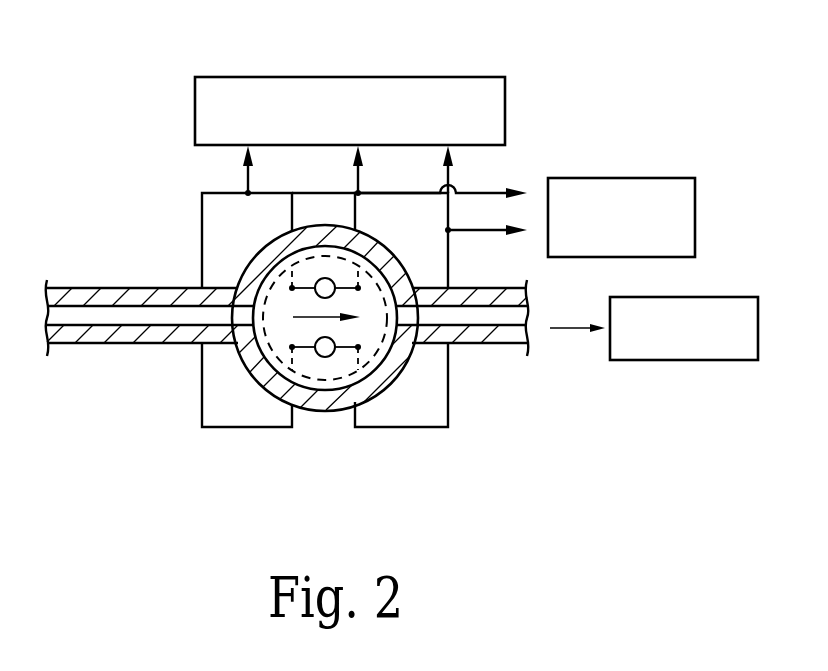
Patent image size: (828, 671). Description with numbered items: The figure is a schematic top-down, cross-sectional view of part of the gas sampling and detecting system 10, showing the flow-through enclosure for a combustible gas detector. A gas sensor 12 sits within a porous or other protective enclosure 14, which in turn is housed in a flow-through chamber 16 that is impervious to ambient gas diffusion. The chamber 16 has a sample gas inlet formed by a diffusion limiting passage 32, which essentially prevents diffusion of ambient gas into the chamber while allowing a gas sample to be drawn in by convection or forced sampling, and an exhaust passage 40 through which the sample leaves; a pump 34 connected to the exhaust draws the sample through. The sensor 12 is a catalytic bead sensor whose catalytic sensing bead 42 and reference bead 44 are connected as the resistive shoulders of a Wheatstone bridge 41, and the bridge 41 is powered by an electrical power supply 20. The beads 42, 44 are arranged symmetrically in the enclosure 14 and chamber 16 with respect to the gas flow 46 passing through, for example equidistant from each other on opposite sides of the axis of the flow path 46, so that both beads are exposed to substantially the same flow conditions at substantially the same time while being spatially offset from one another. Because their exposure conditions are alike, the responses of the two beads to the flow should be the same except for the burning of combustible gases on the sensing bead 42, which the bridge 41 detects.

The system 10 is at (375, 32).
The gas sensor 12 is at (288, 308).
The protective enclosure 14 is at (368, 360).
The flow-through chamber 16 is at (330, 413).
The electrical power supply 20 is at (696, 222).
The diffusion limiting passage 32 is at (78, 345).
The pump 34 is at (690, 361).
The exhaust passage 40 is at (480, 347).
The Wheatstone bridge 41 is at (478, 77).
The catalytic sensing bead 42 is at (323, 357).
The reference bead 44 is at (324, 278).
The gas flow 46 is at (395, 298).